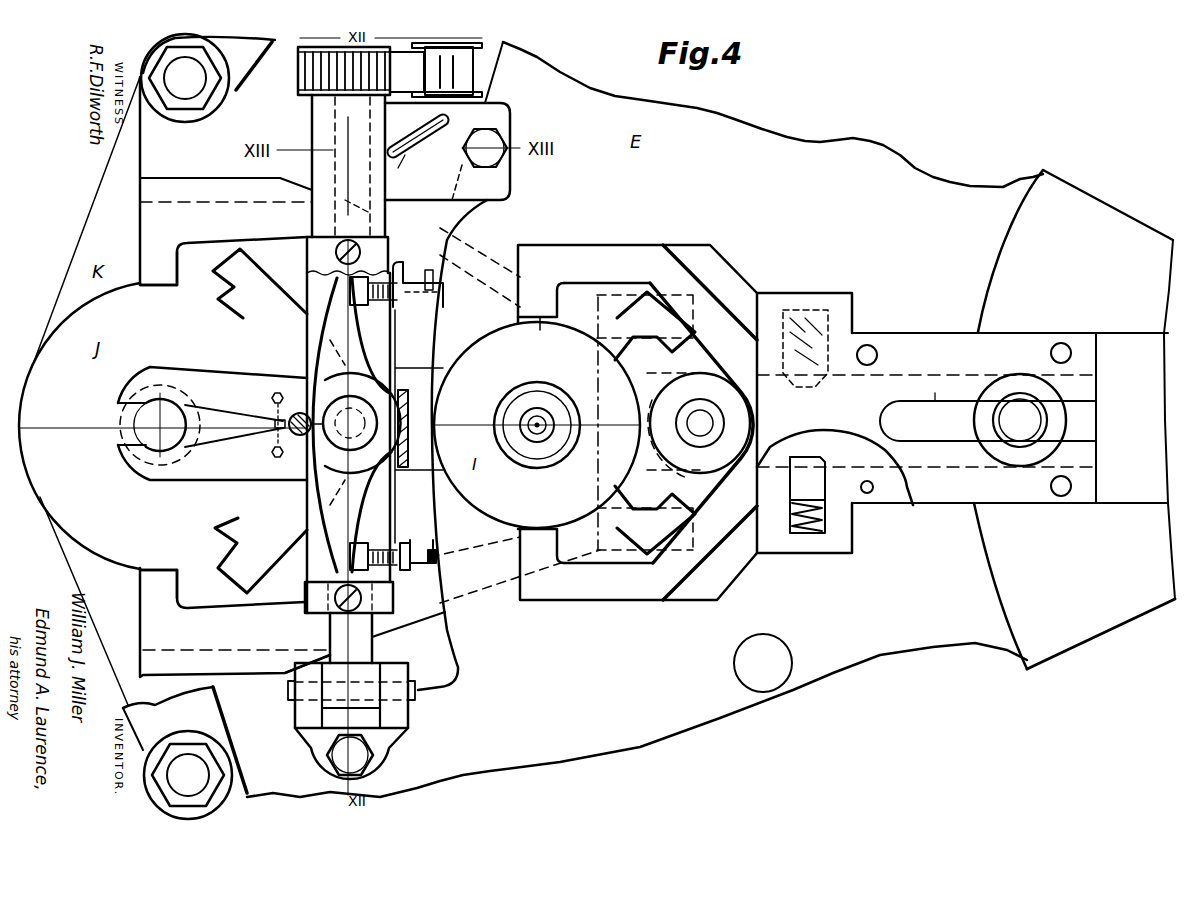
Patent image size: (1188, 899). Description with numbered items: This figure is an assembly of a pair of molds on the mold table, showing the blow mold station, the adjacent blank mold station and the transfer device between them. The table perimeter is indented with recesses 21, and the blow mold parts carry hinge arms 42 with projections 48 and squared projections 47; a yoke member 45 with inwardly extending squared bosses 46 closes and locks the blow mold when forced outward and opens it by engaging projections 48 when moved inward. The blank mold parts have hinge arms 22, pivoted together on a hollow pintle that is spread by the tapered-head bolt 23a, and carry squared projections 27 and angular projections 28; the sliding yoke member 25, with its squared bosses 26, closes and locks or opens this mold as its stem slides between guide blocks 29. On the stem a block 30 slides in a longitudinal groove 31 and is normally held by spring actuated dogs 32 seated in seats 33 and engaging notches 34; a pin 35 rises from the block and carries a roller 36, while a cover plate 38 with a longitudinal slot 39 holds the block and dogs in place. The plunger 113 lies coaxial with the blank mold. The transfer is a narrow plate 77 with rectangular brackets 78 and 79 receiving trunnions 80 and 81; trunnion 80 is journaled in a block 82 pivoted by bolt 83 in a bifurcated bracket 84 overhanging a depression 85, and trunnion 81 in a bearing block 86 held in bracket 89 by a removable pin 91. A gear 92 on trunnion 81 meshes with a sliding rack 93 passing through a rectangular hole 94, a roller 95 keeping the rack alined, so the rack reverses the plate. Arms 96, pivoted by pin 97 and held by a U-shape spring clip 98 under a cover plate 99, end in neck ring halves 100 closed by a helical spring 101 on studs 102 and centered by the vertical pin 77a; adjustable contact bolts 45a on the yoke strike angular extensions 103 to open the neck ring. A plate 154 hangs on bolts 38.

The cover plate / bolts 38 is at (654, 426).
The plate 154 is at (238, 70).
The gear 92 is at (302, 97).
The sliding rack 93 is at (407, 72).
The roller 95 is at (470, 72).
The trunnion 81 is at (312, 137).
The bearing block 86 is at (359, 166).
The bracket 89 is at (447, 151).
The rectangular hole 94 is at (416, 129).
The removable pin 91 is at (398, 170).
The yoke member 45 is at (291, 436).
The squared bosses 46 is at (158, 432).
The squared projections 47 is at (158, 572).
The projections 48 is at (260, 421).
The cover plate 99 is at (307, 262).
The rectangular bracket 79 is at (396, 262).
The angular extension 103 is at (314, 540).
The narrow plate 77 is at (371, 425).
The adjustable contact bolts 45a is at (380, 545).
The hinge arms 42 is at (163, 411).
The neck ring halves 100 is at (159, 425).
The arms 96 is at (234, 418).
The studs 102 is at (272, 398).
The helical spring 101 is at (272, 439).
The vertical pin 77a is at (317, 410).
The pin 97 is at (362, 423).
The U-shape spring clip 98 is at (403, 390).
The rectangular bracket 78 is at (305, 595).
The trunnion 80 is at (330, 625).
The depression 85 is at (408, 632).
The block 82 is at (412, 672).
The bolt 83 is at (415, 692).
The bifurcated bracket 84 is at (403, 752).
The recesses 21 is at (266, 668).
The squared bosses 26 is at (637, 422).
The squared projections 27 is at (530, 335).
The hinge arms 22 is at (632, 423).
The angular projections 28 is at (721, 423).
The sliding yoke member 25 is at (703, 422).
The plunger 113 is at (545, 415).
The bolt 23a is at (705, 402).
The block 30 is at (926, 423).
The longitudinal slot 39 is at (937, 389).
The roller 36 is at (1020, 419).
The pin 35 is at (1020, 420).
The longitudinal groove 31 is at (890, 498).
The notches 34 is at (807, 478).
The spring actuated dogs 32 is at (807, 495).
The seats 33 is at (826, 535).
The guide blocks 29 is at (1074, 419).